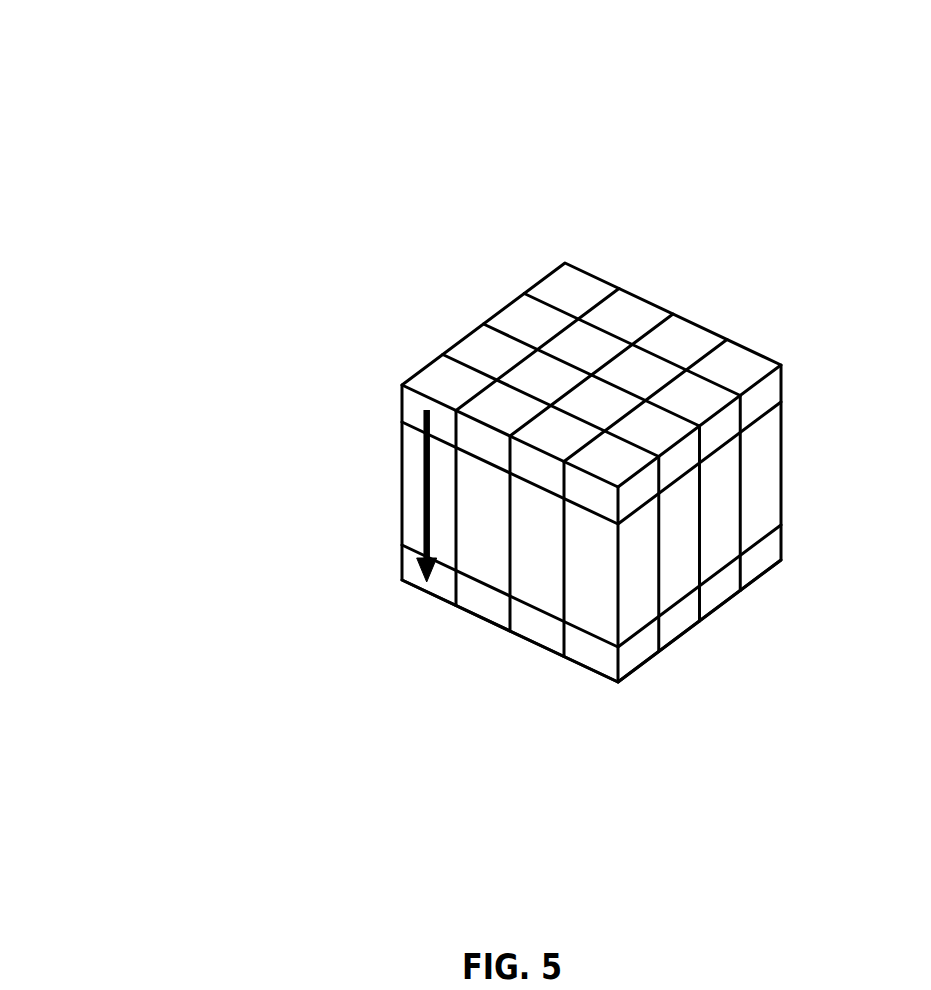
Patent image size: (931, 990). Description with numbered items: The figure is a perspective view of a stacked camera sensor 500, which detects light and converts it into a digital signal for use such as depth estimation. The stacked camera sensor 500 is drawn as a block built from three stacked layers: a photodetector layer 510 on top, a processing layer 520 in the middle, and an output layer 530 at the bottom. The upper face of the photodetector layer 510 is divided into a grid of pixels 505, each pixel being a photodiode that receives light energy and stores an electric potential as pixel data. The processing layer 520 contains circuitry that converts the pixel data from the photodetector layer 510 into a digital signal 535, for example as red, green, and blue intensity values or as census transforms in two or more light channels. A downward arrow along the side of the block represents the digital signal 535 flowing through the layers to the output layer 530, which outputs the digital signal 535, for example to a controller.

The stacked camera sensor 500 is at (409, 351).
The pixels 505 is at (584, 287).
The photodetector layer 510 is at (402, 405).
The processing layer 520 is at (402, 490).
The output layer 530 is at (402, 567).
The digital signal 535 is at (417, 580).